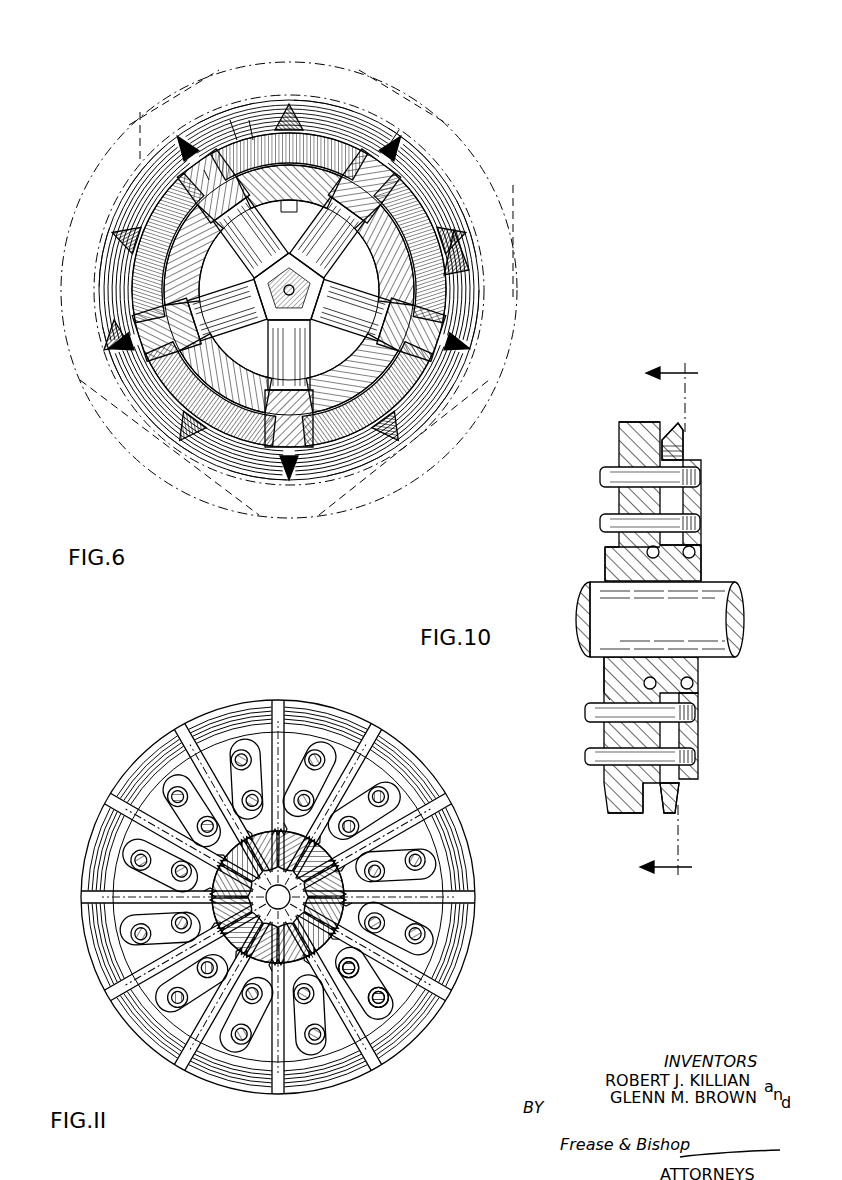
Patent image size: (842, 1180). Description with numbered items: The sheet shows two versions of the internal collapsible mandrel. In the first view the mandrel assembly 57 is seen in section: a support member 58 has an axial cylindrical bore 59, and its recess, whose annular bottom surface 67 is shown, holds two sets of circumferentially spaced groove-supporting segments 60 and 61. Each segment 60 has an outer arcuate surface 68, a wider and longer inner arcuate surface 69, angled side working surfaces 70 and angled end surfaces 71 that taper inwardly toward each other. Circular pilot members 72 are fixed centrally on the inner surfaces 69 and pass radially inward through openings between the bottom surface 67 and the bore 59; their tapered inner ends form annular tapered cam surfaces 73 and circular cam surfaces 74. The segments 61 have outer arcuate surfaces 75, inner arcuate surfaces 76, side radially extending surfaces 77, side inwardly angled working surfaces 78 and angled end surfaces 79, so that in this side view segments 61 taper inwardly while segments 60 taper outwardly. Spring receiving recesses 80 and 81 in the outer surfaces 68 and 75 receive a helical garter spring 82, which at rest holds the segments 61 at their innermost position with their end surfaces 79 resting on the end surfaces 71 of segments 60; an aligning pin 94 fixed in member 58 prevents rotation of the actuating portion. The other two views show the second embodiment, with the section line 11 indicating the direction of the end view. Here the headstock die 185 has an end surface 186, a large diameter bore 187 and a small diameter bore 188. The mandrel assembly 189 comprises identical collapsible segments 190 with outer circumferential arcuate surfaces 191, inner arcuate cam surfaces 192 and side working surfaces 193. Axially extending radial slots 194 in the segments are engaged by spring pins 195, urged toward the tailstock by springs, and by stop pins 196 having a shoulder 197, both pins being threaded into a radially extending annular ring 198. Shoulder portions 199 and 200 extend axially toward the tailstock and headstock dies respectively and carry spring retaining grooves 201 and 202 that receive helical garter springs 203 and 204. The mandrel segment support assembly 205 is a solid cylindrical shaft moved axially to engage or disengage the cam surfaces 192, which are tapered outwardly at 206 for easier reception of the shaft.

In FIG. 6, the mandrel assembly 57 is at (152, 453).
In FIG. 6, the support member 58 is at (409, 412).
In FIG. 6, the bore 59 is at (289, 290).
In FIG. 6, the groove-supporting segments 60 is at (347, 299).
In FIG. 6, the groove-supporting segments 61 is at (265, 275).
In FIG. 6, the annular bottom surface 67 is at (85, 221).
In FIG. 6, the outer arcuate surfaces 68 is at (127, 132).
In FIG. 6, the inner arcuate surfaces 69 is at (209, 88).
In FIG. 6, the angled side working surfaces 70 is at (299, 507).
In FIG. 6, the angled end surfaces 71 is at (215, 276).
In FIG. 6, the pilot members 72 is at (131, 5).
In FIG. 6, the annular tapered cam surfaces 73 is at (294, 295).
In FIG. 6, the circular cam surfaces 74 is at (300, 345).
In FIG. 6, the outer arcuate surfaces 75 is at (74, 254).
In FIG. 6, the inner arcuate surfaces 76 is at (66, 279).
In FIG. 6, the side radially extending surfaces 77 is at (66, 300).
In FIG. 6, the side inwardly angled working surfaces 78 is at (70, 323).
In FIG. 6, the angled end surfaces 79 is at (87, 363).
In FIG. 6, the spring receiving recesses 80 is at (454, 146).
In FIG. 6, the spring receiving recesses 81 is at (497, 252).
In FIG. 6, the helical garter spring 82 is at (479, 153).
In FIG. 6, the aligning pin 94 is at (270, 226).
In FIG. 10, the section line 11— 11 is at (680, 620).
In FIG. 10, the headstock die 185 is at (615, 798).
In FIG. 10, the end surface 186 is at (668, 800).
In FIG. 10, the large diameter bore 187 is at (606, 670).
In FIG. 10, the small diameter bore 188 is at (600, 636).
In FIG. 10, the mandrel assembly 189 is at (695, 462).
In FIG. 11, the mandrel assembly 189 is at (278, 917).
In FIG. 10, the collapsible segments 190 is at (703, 580).
In FIG. 11, the collapsible segments 190 is at (279, 897).
In FIG. 10, the outer circumferential arcuate surfaces 191 is at (674, 424).
In FIG. 10, the inner arcuate cam surfaces 192 is at (740, 648).
In FIG. 10, the side working surfaces 193 is at (650, 428).
In FIG. 10, the radial slots 194 is at (690, 498).
In FIG. 11, the radial slots 194 is at (290, 887).
In FIG. 10, the spring pins 195 is at (607, 521).
In FIG. 11, the spring pins 195 is at (286, 854).
In FIG. 10, the stop pins 196 is at (608, 474).
In FIG. 11, the stop pins 196 is at (216, 907).
In FIG. 10, the shoulder 197 is at (648, 806).
In FIG. 10, the annular ring 198 is at (700, 736).
In FIG. 10, the shoulder portions 199 is at (703, 568).
In FIG. 10, the shoulder portions 200 is at (600, 695).
In FIG. 10, the spring retaining grooves 201 is at (700, 668).
In FIG. 10, the spring retaining grooves 202 is at (700, 684).
In FIG. 10, the helical garter spring 203 is at (648, 550).
In FIG. 11, the helical garter spring 203 is at (363, 904).
In FIG. 10, the helical garter spring 204 is at (700, 696).
In FIG. 10, the mandrel segment support assembly 205 is at (600, 576).
In FIG. 10, the tapered portion 206 is at (628, 565).